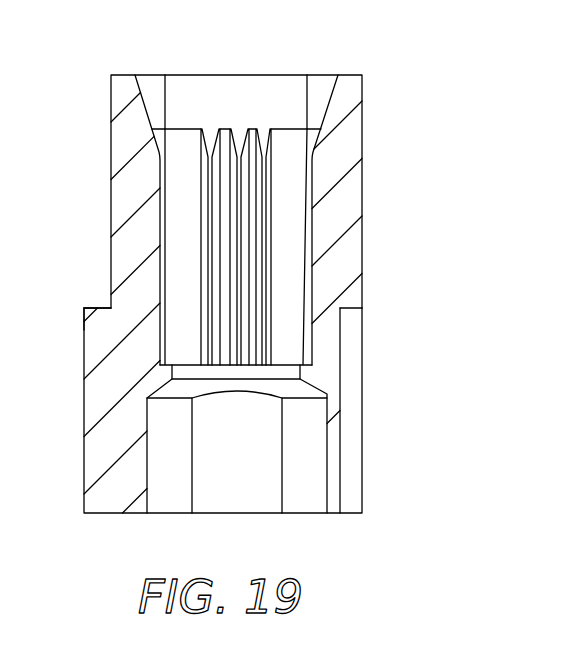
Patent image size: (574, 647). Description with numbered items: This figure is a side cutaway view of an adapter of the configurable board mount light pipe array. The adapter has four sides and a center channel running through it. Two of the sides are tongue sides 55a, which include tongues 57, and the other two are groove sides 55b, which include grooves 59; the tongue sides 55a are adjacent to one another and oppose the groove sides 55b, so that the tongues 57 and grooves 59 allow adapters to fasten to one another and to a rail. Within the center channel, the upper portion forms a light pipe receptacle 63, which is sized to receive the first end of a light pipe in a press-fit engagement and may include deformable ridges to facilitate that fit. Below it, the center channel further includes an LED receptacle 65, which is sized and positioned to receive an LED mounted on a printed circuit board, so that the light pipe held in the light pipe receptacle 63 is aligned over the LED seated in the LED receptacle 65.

The tongue side 55a is at (111, 160).
The groove side 55b is at (362, 217).
The tongue 57 is at (98, 307).
The groove 59 is at (357, 408).
The light pipe receptacle 63 is at (256, 102).
The LED receptacle 65 is at (244, 445).